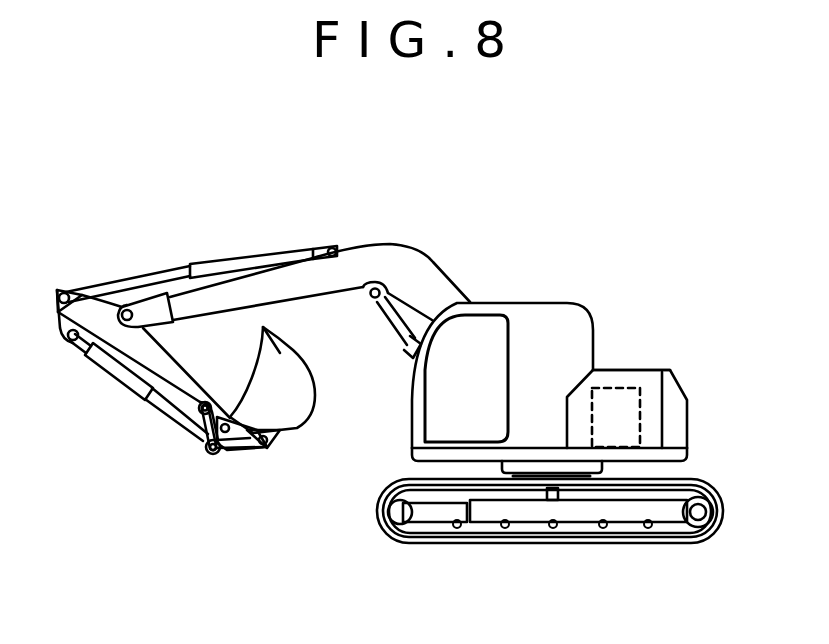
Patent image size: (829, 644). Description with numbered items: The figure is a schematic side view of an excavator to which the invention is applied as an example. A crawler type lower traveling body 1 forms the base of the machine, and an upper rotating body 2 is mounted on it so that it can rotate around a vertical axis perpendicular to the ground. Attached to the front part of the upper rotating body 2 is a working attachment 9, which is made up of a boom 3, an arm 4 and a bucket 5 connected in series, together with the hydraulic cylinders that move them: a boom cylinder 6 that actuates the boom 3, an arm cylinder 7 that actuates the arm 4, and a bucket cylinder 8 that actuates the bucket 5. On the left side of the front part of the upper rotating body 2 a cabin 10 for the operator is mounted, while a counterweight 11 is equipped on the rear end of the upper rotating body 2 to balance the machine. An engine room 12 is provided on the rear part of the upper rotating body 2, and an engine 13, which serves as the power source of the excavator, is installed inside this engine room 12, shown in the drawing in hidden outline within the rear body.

The lower traveling body 1 is at (543, 542).
The upper rotating body 2 is at (588, 344).
The boom 3 is at (417, 260).
The arm 4 is at (125, 344).
The bucket 5 is at (313, 417).
The boom cylinder 6 is at (400, 324).
The arm cylinder 7 is at (245, 258).
The bucket cylinder 8 is at (127, 377).
The working attachment 9 is at (263, 310).
The cabin 10 is at (573, 328).
The counterweight 11 is at (687, 424).
The engine room 12 is at (648, 364).
The engine 13 is at (649, 406).